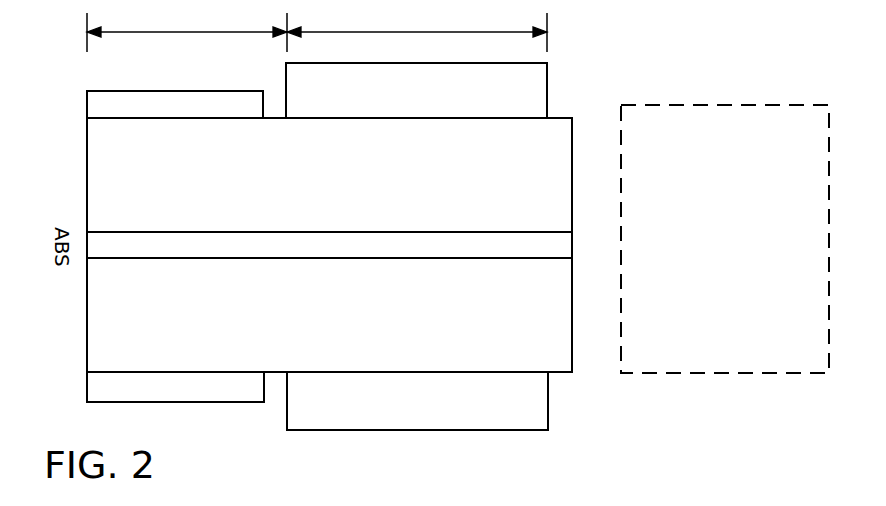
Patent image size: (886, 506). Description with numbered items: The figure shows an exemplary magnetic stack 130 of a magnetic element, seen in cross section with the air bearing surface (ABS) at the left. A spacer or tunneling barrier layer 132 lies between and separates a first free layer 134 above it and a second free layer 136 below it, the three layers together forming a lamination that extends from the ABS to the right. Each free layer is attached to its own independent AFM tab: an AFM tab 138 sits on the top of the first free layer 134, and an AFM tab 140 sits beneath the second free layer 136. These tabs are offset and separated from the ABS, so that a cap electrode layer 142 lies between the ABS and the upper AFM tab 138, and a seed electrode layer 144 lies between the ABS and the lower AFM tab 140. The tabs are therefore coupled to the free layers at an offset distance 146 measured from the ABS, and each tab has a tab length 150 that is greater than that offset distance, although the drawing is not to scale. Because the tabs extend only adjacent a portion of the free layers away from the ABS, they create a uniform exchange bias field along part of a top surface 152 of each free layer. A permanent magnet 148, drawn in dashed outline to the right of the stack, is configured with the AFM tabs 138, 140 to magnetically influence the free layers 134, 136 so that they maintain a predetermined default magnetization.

The magnetic stack 130 is at (703, 46).
The spacer or tunneling barrier layer 132 is at (329, 245).
The first free layer 134 is at (329, 175).
The second free layer 136 is at (329, 315).
The AFM tab 138 is at (545, 70).
The AFM tab 140 is at (488, 430).
The cap electrode layer 142 is at (87, 108).
The seed electrode layer 144 is at (87, 386).
The offset distance 146 is at (187, 32).
The permanent magnet 148 is at (787, 109).
The tab length 150 is at (417, 32).
The top surface 152 is at (563, 117).